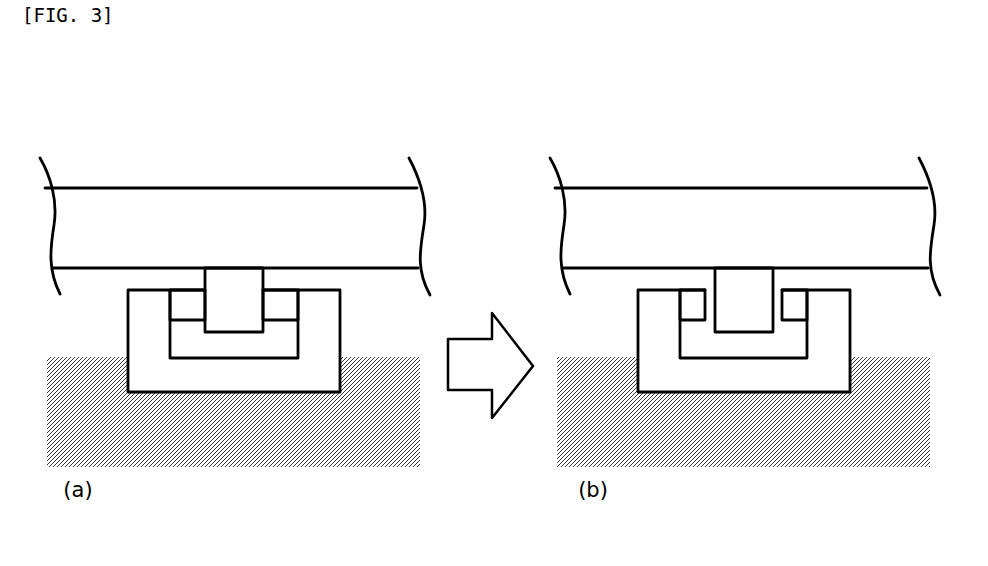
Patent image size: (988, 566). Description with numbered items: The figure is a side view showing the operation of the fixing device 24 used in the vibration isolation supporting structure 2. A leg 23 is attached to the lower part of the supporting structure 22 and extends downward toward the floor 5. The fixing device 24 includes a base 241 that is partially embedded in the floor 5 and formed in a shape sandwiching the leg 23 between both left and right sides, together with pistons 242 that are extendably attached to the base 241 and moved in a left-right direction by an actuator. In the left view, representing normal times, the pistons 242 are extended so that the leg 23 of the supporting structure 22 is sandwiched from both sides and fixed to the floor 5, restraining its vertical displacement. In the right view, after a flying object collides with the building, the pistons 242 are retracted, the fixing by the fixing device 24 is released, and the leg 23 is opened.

The vibration isolation supporting structure 2 is at (304, 178).
The supporting structure 22 is at (347, 198).
The fixing device 24 is at (489, 227).
The base 241 is at (143, 302).
The piston 242 is at (190, 302).
The leg 23 is at (233, 308).
The floor 5 is at (357, 435).